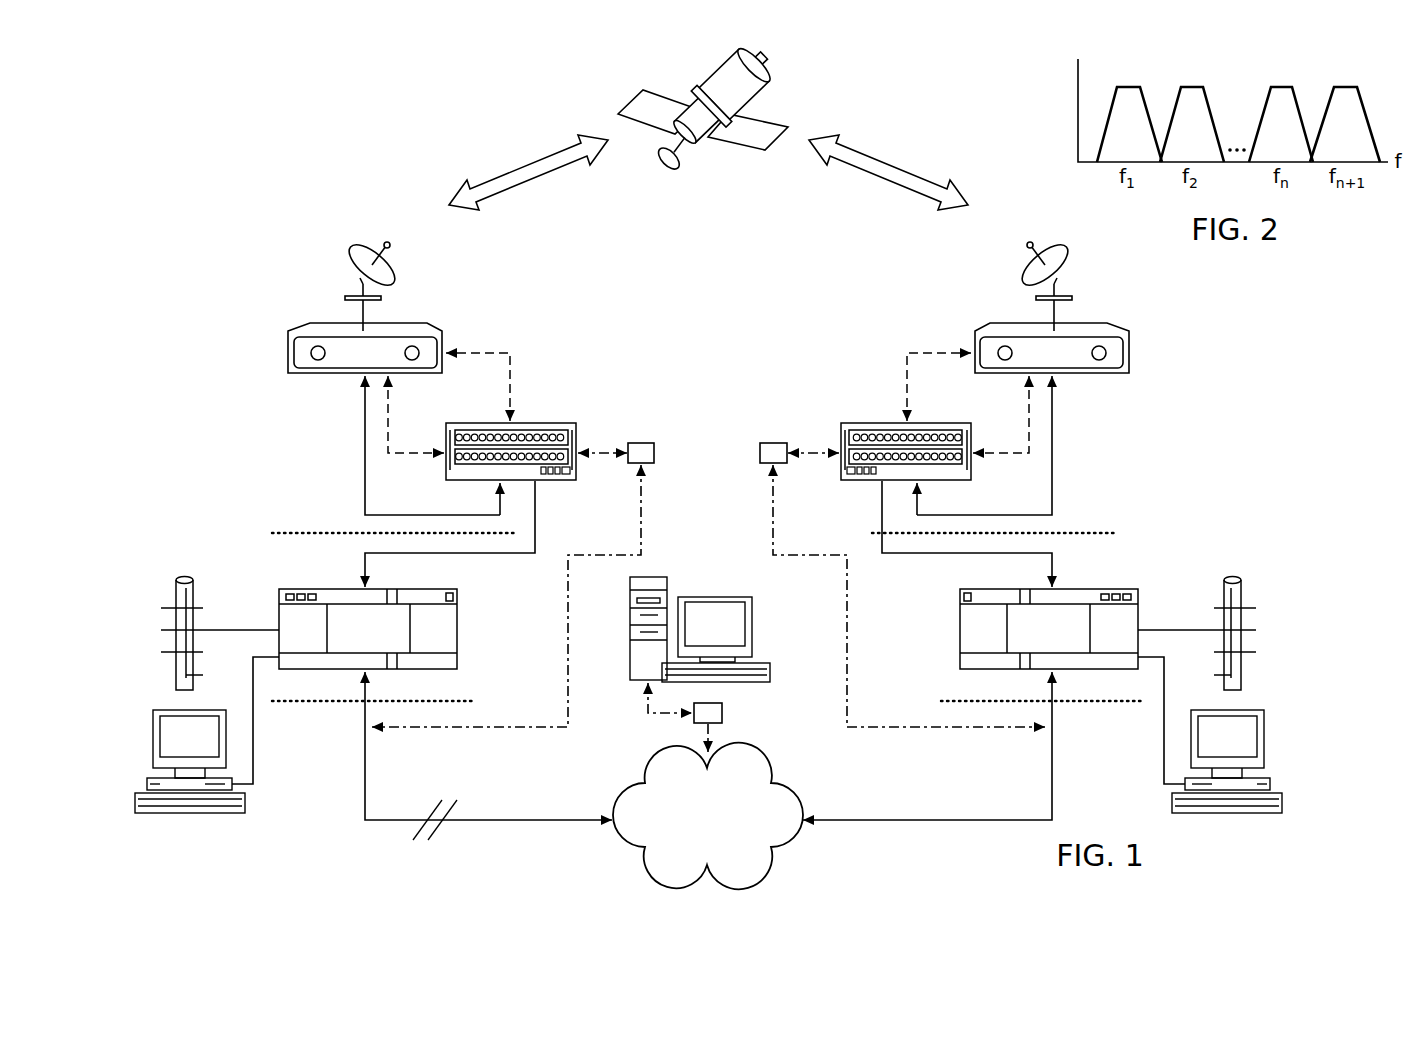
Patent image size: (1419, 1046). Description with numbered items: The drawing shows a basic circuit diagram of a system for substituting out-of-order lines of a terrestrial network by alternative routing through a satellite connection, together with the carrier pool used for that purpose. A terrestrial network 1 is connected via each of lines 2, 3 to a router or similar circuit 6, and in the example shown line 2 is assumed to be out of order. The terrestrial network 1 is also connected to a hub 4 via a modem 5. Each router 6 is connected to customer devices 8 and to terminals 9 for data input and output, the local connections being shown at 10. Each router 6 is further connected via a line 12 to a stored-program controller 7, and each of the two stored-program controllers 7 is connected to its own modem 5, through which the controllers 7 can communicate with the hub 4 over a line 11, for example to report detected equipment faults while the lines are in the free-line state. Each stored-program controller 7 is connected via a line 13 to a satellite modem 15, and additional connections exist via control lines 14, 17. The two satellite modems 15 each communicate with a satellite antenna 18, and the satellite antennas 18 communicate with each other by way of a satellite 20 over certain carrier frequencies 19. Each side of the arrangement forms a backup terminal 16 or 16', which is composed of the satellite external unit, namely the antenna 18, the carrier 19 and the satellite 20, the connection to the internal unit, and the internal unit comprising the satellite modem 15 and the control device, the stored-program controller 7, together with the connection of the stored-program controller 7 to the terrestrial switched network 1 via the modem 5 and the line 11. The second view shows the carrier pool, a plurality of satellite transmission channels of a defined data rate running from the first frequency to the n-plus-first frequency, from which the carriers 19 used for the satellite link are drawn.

In FIG. 1, the terrestrial network 1 is at (698, 831).
In FIG. 1, the line 2 is at (535, 820).
In FIG. 1, the line 3 is at (883, 820).
In FIG. 1, the hub 4 is at (667, 590).
In FIG. 1, the modem 5 is at (760, 453).
In FIG. 1, the router 6 is at (457, 632).
In FIG. 1, the stored-program controller 7 is at (556, 423).
In FIG. 1, the customer device 8 is at (192, 578).
In FIG. 1, the terminal 9 is at (160, 710).
In FIG. 1, the local network link 10 is at (265, 656).
In FIG. 1, the line 11 is at (773, 515).
In FIG. 1, the line 12 is at (523, 553).
In FIG. 1, the line 13 is at (365, 470).
In FIG. 1, the control line 14 is at (388, 410).
In FIG. 1, the satellite modem 15 is at (412, 326).
In FIG. 1, the backup terminal 16 is at (379, 547).
In FIG. 1, the backup terminal 16' is at (1023, 547).
In FIG. 1, the control line 17 is at (513, 362).
In FIG. 1, the satellite antenna 18 is at (370, 250).
In FIG. 1, the carrier frequency 19 is at (533, 180).
In FIG. 2, the carrier frequency 19 is at (1130, 88).
In FIG. 1, the satellite 20 is at (773, 83).